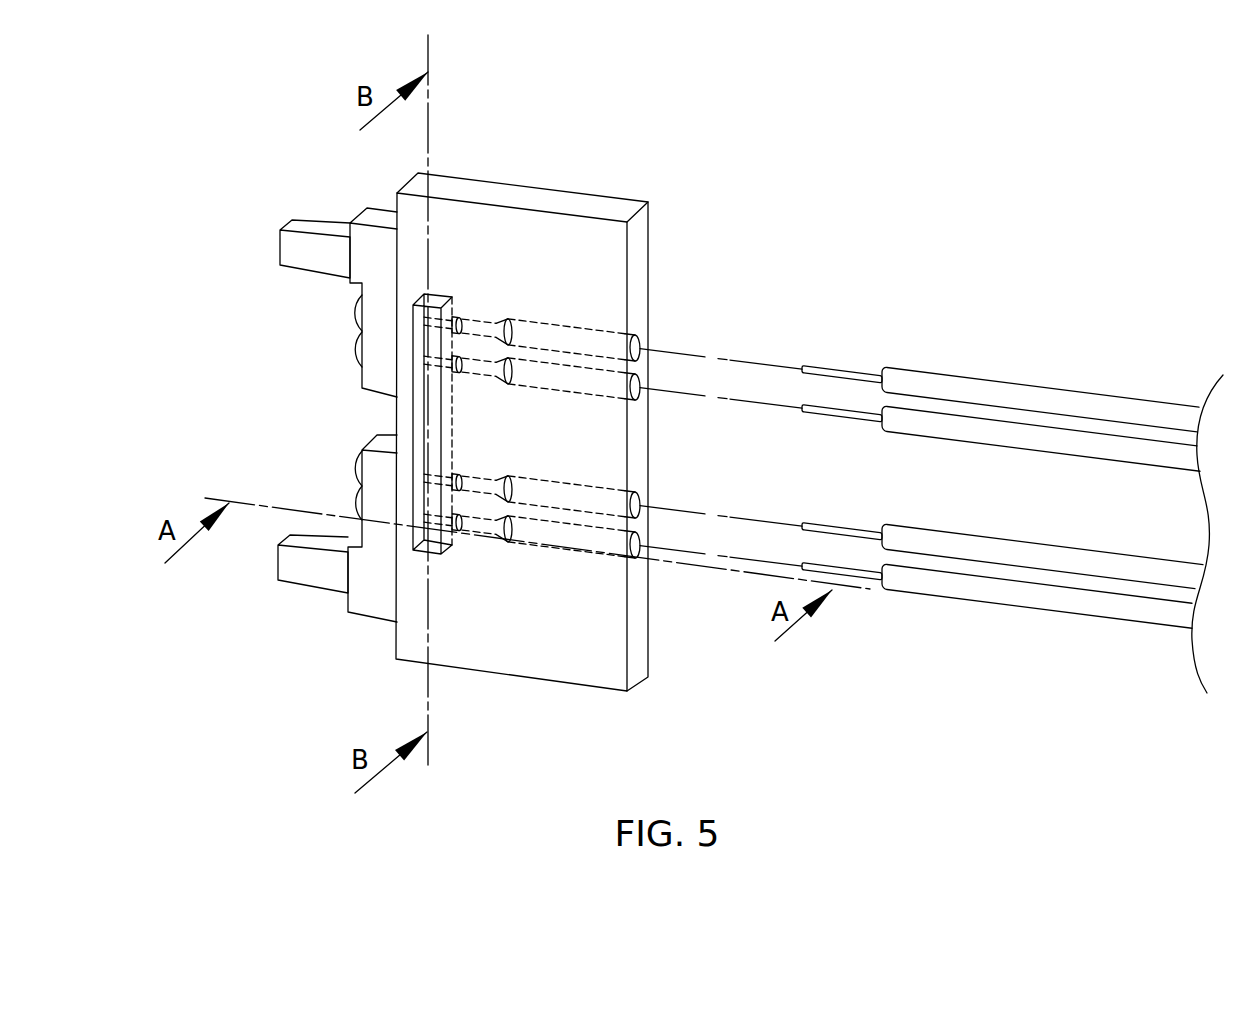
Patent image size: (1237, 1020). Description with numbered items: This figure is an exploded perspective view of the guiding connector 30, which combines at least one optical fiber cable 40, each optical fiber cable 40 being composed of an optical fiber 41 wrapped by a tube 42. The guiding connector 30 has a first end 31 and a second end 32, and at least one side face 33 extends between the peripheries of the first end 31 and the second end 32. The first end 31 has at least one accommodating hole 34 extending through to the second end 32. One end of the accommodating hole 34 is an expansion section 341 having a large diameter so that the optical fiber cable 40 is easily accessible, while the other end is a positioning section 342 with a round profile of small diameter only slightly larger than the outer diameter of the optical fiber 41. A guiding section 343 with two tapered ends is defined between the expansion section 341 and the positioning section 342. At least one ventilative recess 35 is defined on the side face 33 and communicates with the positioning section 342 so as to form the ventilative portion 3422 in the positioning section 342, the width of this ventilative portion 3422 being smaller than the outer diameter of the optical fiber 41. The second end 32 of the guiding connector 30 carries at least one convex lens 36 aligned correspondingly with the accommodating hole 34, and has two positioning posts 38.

The guiding connector 30 is at (636, 193).
The first end 31 is at (638, 320).
The second end 32 is at (358, 378).
The side face 33 is at (463, 585).
The accommodating hole 34 is at (485, 92).
The expansion section 341 is at (558, 333).
The positioning section 342 is at (452, 295).
The ventilative portion 3422 is at (518, 554).
The guiding section 343 is at (477, 322).
The ventilative recess 35 is at (422, 538).
The convex lens 36 is at (355, 352).
The positioning posts 38 is at (298, 240).
The optical fiber cable 40 is at (1133, 400).
The optical fiber 41 is at (845, 377).
The tube 42 is at (1015, 397).